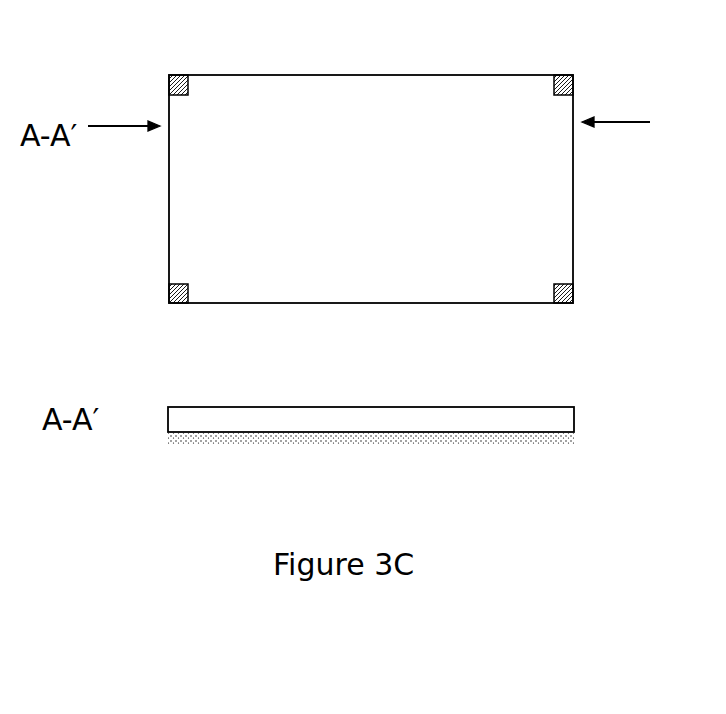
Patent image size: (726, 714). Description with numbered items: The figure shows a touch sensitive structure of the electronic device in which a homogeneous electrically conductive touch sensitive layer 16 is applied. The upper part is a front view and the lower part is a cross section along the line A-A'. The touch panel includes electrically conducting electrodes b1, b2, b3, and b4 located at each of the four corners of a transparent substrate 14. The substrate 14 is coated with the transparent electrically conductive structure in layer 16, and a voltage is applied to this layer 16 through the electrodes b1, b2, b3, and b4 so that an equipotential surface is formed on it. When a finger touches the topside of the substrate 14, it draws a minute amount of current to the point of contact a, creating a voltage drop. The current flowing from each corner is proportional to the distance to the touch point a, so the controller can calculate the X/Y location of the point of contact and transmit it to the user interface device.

The touch point a is at (553, 163).
The electrically conducting electrode b1 is at (190, 75).
The electrically conducting electrode b2 is at (573, 75).
The electrically conducting electrode b3 is at (574, 290).
The electrically conducting electrode b4 is at (188, 287).
The substrate 14 is at (572, 413).
The electrically conductive touch sensitive layer 16 is at (570, 438).